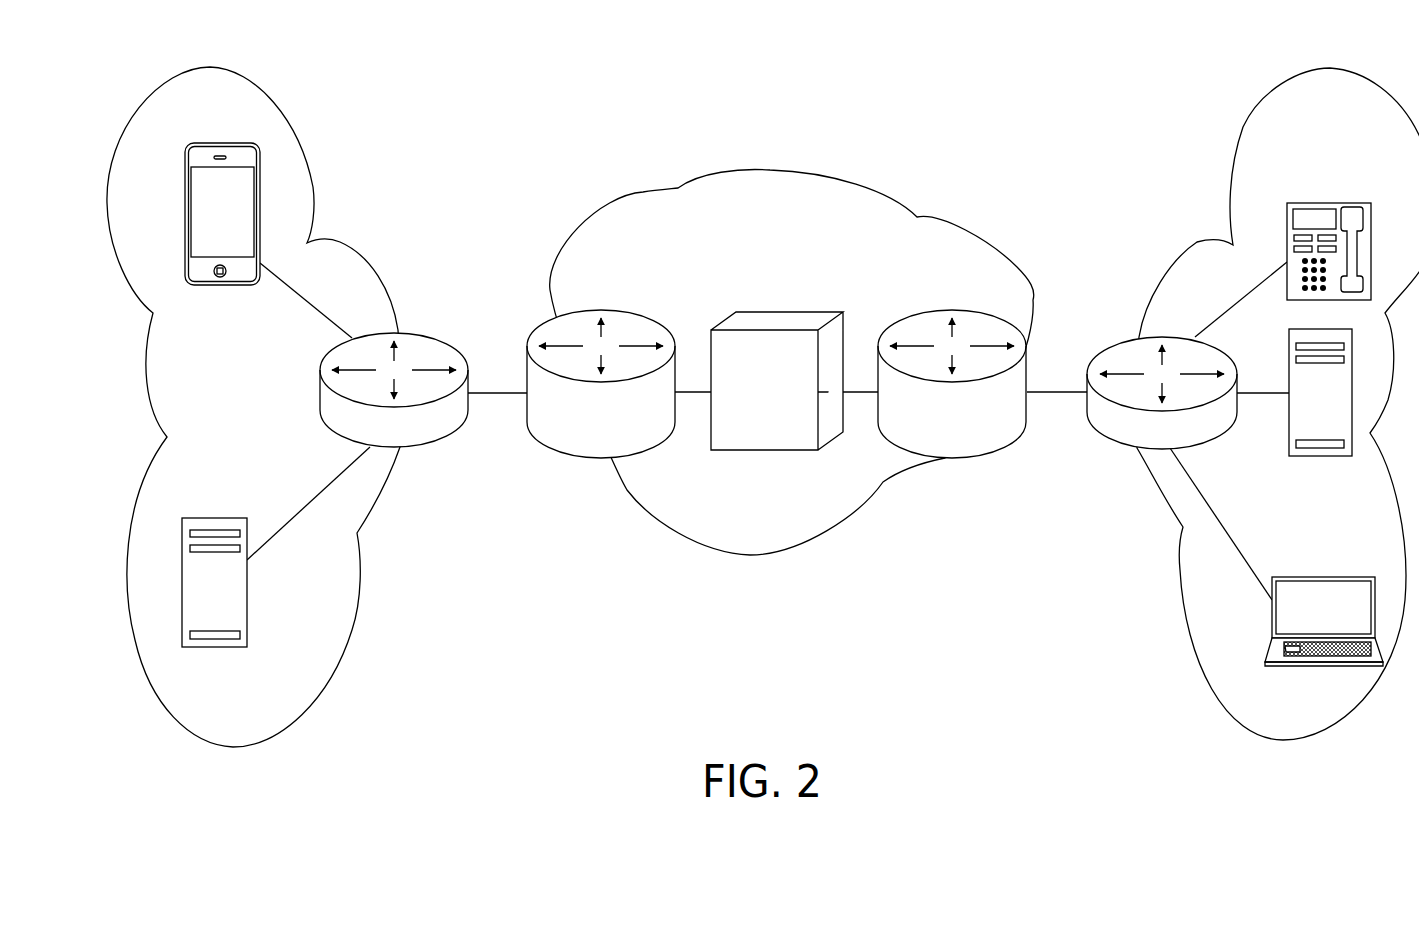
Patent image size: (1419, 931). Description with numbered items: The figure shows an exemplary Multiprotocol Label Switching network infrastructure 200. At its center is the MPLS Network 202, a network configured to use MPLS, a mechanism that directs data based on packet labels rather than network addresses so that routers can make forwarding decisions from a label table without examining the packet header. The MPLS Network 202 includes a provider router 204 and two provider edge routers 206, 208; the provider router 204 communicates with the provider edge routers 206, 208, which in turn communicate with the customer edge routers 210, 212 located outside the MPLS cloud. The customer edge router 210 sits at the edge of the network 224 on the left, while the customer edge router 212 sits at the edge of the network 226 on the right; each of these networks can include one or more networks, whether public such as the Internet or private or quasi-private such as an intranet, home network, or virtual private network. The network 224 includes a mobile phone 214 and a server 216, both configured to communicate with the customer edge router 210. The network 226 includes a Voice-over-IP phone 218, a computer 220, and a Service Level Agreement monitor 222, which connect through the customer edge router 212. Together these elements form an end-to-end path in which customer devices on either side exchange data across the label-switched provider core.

The Multiprotocol Label Switching network infrastructure 200 is at (763, 424).
The MPLS Network 202 is at (663, 536).
The provider router 204 is at (754, 450).
The provider edge router 206 is at (970, 458).
The provider edge router 208 is at (551, 458).
The customer edge router 210 is at (320, 410).
The customer edge router 212 is at (1203, 450).
The mobile phone 214 is at (227, 286).
The server 216 is at (247, 600).
The Voice-over-IP phone 218 is at (1321, 203).
The computer 220 is at (1300, 577).
The Service Level Agreement monitor 222 is at (1335, 457).
The network 224 is at (333, 683).
The network 226 is at (1230, 716).